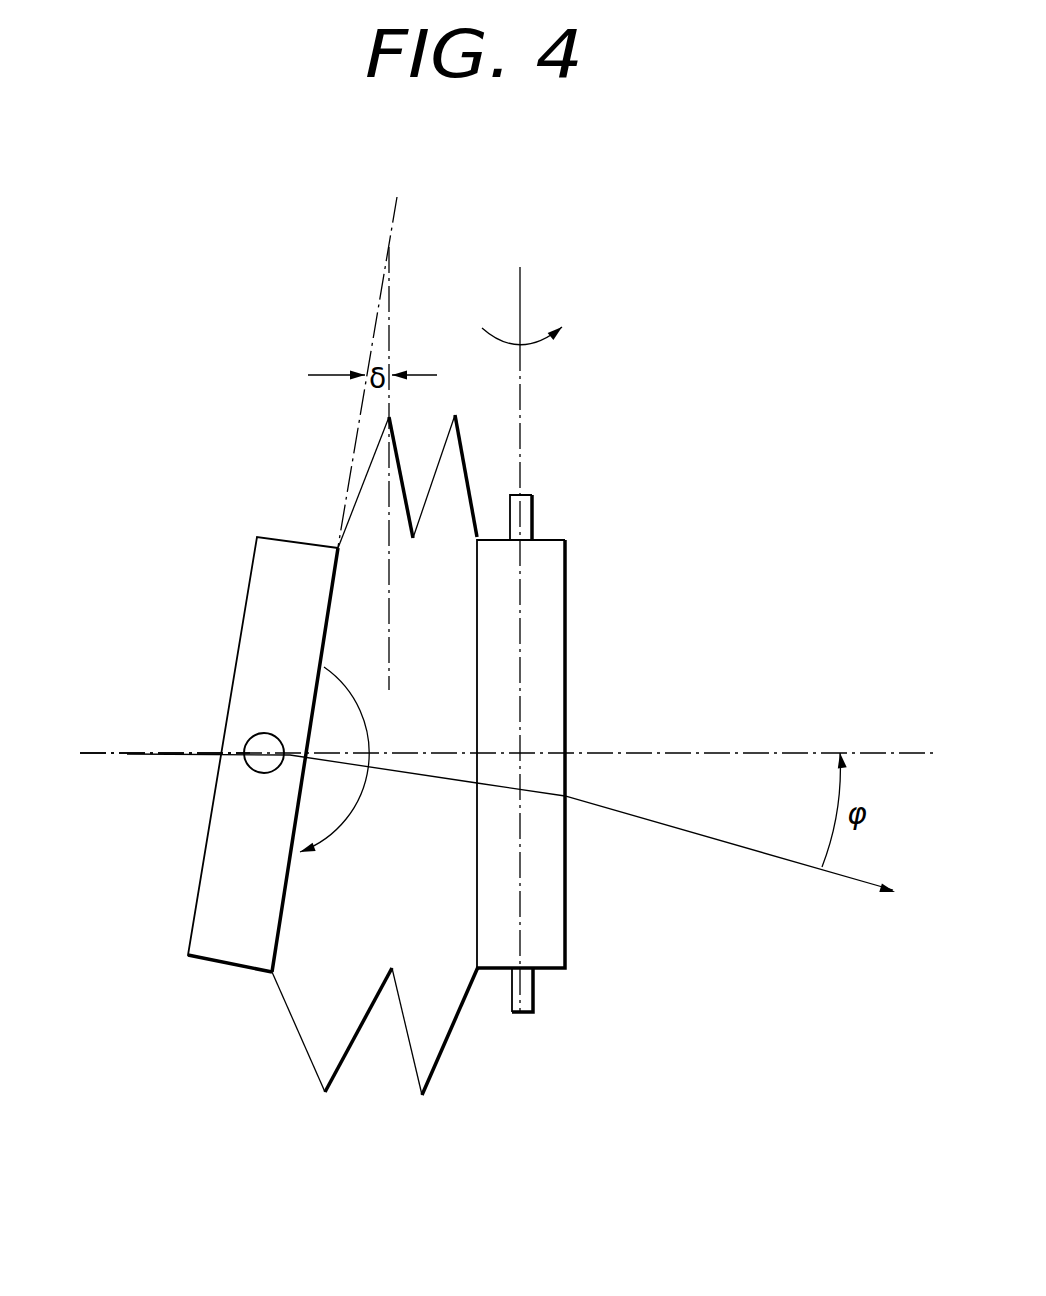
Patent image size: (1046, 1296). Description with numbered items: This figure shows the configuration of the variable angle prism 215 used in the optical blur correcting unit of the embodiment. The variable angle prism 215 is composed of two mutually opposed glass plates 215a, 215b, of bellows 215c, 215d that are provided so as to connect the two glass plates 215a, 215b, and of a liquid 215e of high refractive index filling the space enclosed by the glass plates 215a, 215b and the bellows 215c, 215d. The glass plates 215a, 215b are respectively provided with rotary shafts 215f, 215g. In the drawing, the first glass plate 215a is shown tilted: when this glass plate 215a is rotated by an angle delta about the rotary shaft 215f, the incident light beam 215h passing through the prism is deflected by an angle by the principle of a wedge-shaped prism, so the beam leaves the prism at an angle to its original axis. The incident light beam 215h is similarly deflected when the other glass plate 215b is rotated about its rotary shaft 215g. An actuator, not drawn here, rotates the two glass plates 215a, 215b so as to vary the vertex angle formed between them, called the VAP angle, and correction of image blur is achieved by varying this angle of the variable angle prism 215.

The variable angle prism 215 is at (607, 203).
The glass plate 215a is at (253, 550).
The glass plate 215b is at (565, 623).
The bellows 215c is at (472, 483).
The bellows 215d is at (423, 1095).
The liquid 215e is at (322, 960).
The rotary shaft 215f is at (245, 740).
The rotary shaft 215g is at (533, 997).
The incident light beam 215h is at (87, 760).